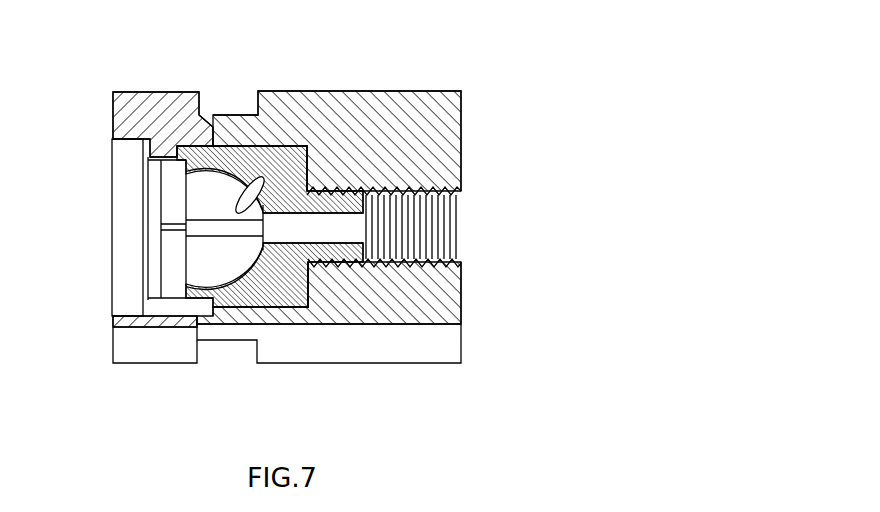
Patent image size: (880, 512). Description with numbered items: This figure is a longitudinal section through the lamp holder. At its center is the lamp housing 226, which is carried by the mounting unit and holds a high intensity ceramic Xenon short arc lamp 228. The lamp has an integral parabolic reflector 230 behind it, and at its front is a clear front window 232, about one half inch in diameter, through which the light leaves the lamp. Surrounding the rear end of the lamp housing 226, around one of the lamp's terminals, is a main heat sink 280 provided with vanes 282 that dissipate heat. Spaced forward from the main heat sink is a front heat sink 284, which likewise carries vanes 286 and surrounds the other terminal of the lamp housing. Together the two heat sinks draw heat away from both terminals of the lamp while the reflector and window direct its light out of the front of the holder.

The lamp housing 226 is at (207, 265).
The high intensity ceramic Xenon short arc lamp 228 is at (166, 226).
The integral parabolic reflector 230 is at (235, 207).
The clear front window 232 is at (143, 178).
The main heat sink 280 is at (447, 140).
The vanes 282 is at (453, 350).
The front heat sink 284 is at (151, 112).
The vanes 286 is at (113, 350).